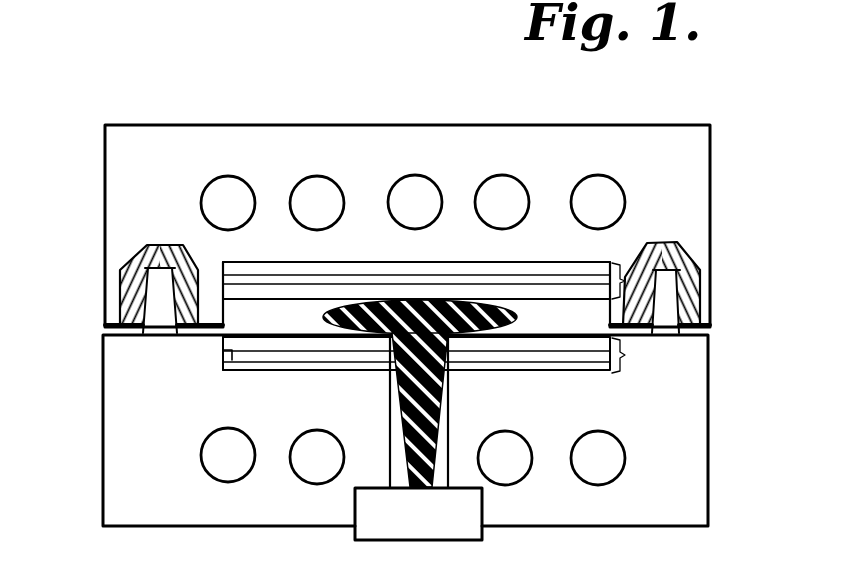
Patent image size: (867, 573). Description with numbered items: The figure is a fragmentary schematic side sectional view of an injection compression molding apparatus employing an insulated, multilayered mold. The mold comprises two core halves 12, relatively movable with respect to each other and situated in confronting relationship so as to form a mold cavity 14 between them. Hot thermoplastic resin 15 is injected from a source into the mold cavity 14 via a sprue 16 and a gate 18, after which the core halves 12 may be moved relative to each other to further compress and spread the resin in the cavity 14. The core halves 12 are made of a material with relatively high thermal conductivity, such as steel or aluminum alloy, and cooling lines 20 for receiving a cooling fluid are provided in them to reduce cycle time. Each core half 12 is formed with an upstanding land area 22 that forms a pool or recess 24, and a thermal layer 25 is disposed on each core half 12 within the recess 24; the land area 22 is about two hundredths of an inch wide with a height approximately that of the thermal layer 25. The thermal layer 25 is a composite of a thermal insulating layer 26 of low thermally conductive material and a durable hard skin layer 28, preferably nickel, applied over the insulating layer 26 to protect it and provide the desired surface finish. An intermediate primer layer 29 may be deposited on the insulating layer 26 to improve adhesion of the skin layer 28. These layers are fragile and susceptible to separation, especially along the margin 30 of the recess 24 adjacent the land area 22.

The core half 12 is at (710, 280).
The mold cavity 14 is at (237, 313).
The thermoplastic resin 15 is at (407, 303).
The sprue 16 is at (433, 472).
The gate 18 is at (440, 410).
The cooling lines 20 is at (298, 191).
The land area 22 is at (223, 338).
The recess 24 is at (587, 265).
The thermal layer 25 is at (615, 262).
The thermal insulating layer 26 is at (433, 268).
The hard skin layer 28 is at (520, 293).
The primer layer 29 is at (287, 280).
The margin 30 is at (223, 365).